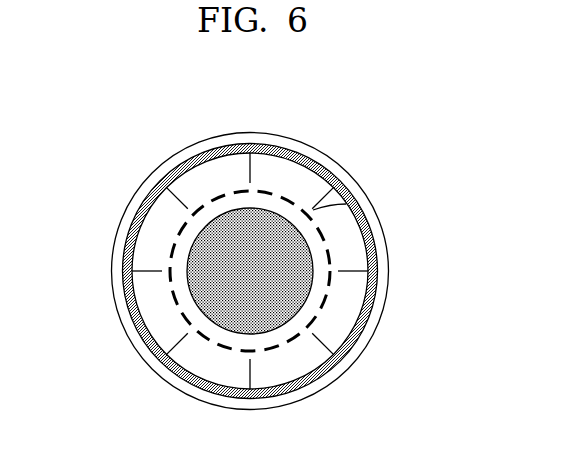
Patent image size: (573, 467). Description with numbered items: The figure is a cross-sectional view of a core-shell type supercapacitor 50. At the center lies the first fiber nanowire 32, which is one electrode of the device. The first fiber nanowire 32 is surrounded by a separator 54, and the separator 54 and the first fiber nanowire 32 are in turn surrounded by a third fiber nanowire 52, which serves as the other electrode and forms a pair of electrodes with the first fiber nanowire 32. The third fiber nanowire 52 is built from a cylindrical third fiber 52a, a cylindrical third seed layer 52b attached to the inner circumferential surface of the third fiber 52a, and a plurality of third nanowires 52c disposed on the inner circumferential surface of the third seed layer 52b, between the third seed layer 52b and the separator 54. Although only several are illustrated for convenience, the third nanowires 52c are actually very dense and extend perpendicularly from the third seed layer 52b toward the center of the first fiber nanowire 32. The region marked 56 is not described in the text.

The supercapacitor 50 is at (120, 157).
The third fiber nanowire 52 is at (285, 249).
The third fiber 52a is at (318, 155).
The third seed layer 52b is at (372, 222).
The third nanowires 52c is at (363, 195).
The spacer ribs 56 is at (348, 247).
The separator 54 is at (283, 342).
The first fiber nanowire 32 is at (297, 289).